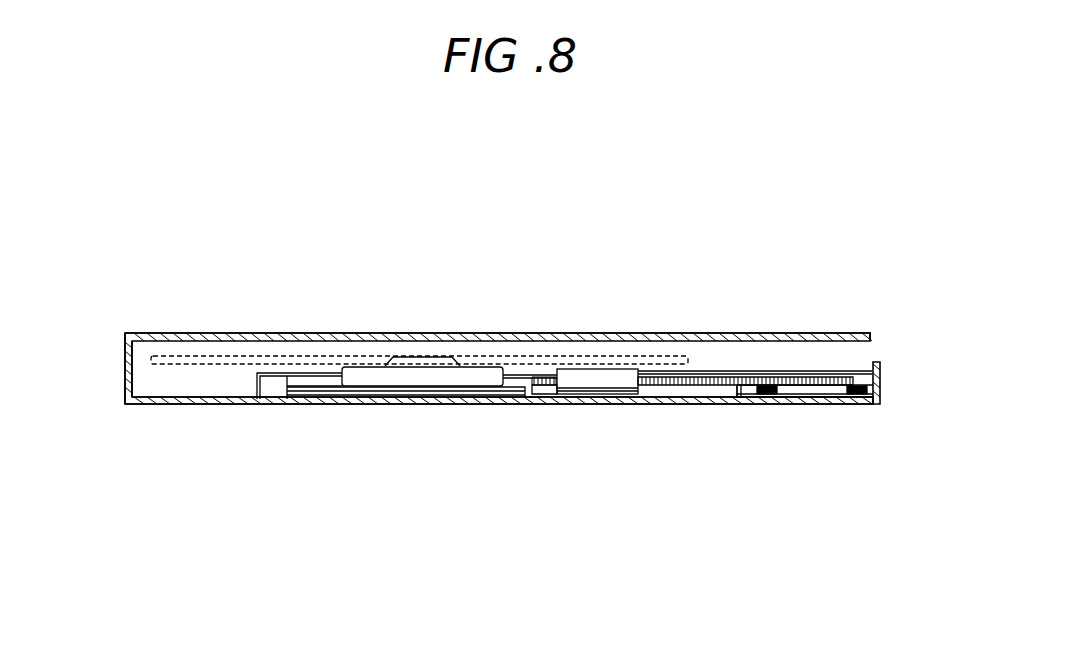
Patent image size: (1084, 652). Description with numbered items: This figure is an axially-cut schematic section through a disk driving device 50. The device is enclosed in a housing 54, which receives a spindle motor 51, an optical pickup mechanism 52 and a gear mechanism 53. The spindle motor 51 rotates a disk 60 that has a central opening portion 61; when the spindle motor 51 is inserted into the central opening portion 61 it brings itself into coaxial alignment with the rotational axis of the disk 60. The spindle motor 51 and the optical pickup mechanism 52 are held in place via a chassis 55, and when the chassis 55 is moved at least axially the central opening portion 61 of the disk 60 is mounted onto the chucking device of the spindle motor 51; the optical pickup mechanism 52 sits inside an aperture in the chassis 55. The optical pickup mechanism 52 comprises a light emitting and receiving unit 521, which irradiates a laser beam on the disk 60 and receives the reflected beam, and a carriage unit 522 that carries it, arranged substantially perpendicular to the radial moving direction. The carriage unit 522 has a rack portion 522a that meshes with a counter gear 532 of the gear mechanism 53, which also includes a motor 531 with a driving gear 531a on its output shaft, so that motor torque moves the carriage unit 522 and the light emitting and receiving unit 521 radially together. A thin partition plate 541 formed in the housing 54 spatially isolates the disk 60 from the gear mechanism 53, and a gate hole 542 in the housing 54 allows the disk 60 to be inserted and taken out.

The disk driving device 50 is at (180, 222).
The housing 54 is at (288, 318).
The thin partition plate 541 is at (758, 372).
The gate hole 542 is at (875, 347).
The disk 60 is at (508, 350).
The central opening portion 61 is at (457, 357).
The spindle motor 51 is at (337, 383).
The chassis 55 is at (425, 400).
The optical pickup mechanism 52 is at (593, 396).
The light emitting and receiving unit 521 is at (582, 386).
The carriage unit 522 is at (698, 388).
The rack portion 522a is at (657, 388).
The gear mechanism 53 is at (823, 393).
The motor 531 is at (798, 388).
The driving gear 531a is at (826, 375).
The counter gear 532 is at (745, 388).